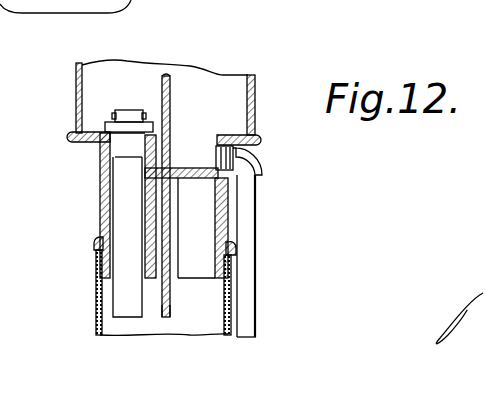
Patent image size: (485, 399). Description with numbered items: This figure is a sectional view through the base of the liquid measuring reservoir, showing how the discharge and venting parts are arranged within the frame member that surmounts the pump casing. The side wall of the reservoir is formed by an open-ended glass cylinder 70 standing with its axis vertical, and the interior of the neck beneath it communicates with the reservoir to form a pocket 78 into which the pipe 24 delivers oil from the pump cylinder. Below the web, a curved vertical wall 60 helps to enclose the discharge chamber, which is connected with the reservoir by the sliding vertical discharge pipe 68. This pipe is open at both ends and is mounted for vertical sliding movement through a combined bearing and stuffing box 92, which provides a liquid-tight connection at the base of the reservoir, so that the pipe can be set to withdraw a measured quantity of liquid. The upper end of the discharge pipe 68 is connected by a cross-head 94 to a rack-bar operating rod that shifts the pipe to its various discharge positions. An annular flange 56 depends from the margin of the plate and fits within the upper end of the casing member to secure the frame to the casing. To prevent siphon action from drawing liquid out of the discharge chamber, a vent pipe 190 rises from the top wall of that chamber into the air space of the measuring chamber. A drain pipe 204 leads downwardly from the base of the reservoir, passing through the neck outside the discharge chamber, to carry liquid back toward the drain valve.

The glass cylinder 70 is at (232, 92).
The pipe 190 is at (170, 82).
The pocket 78 is at (197, 140).
The pipe 24 is at (240, 200).
The curved vertical wall 60 is at (240, 210).
The cross-head 94 is at (105, 113).
The combined bearing and stuffing box 92 is at (133, 142).
The sliding vertical discharge pipe 68 is at (128, 208).
The annular flange 56 is at (212, 260).
The drain pipe 204 is at (164, 302).